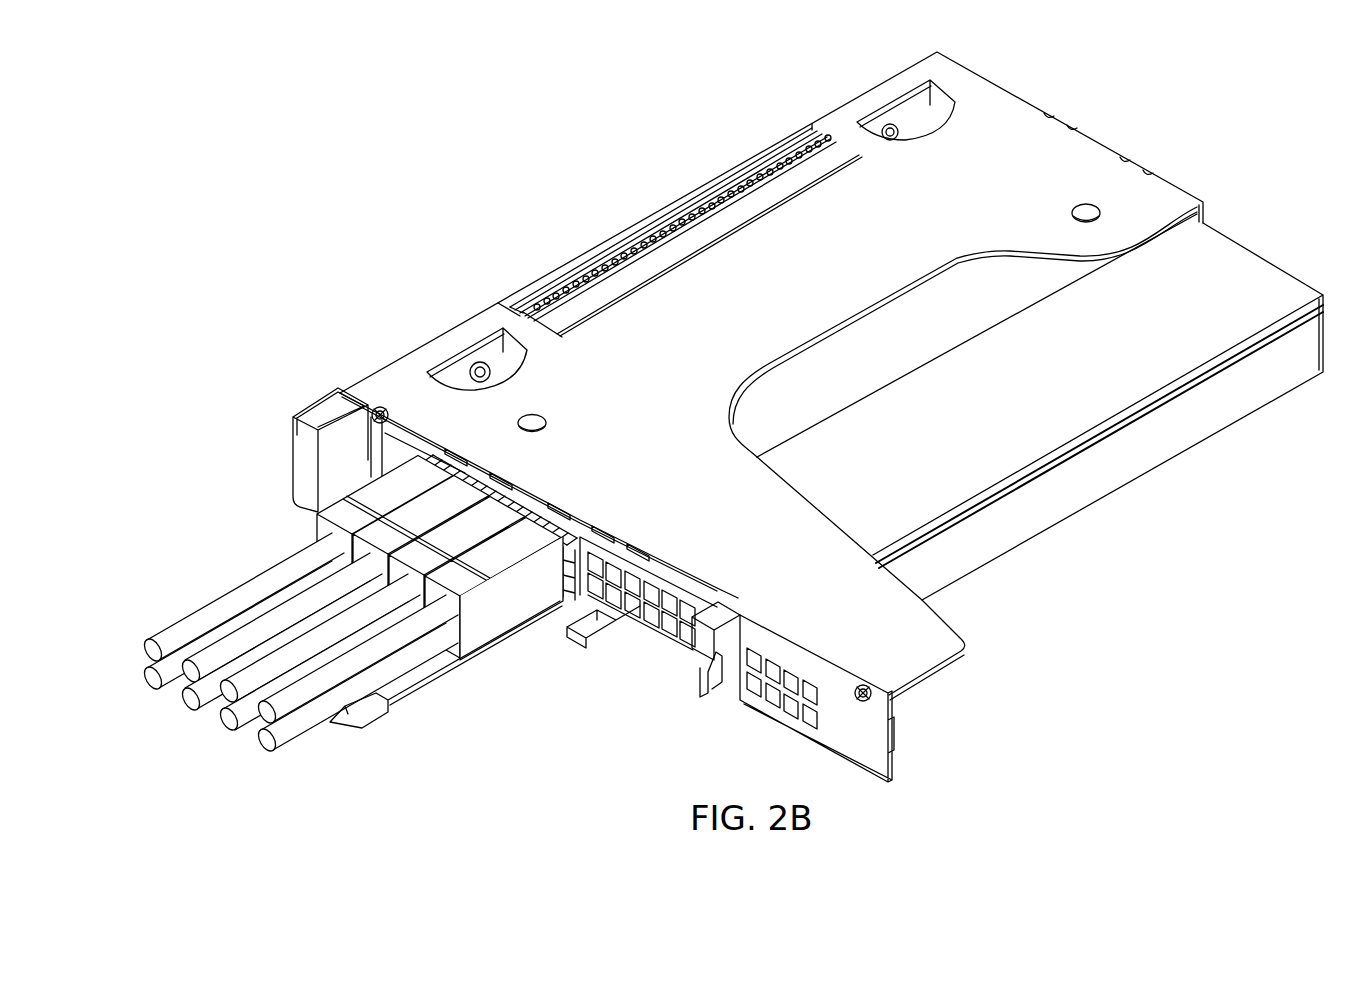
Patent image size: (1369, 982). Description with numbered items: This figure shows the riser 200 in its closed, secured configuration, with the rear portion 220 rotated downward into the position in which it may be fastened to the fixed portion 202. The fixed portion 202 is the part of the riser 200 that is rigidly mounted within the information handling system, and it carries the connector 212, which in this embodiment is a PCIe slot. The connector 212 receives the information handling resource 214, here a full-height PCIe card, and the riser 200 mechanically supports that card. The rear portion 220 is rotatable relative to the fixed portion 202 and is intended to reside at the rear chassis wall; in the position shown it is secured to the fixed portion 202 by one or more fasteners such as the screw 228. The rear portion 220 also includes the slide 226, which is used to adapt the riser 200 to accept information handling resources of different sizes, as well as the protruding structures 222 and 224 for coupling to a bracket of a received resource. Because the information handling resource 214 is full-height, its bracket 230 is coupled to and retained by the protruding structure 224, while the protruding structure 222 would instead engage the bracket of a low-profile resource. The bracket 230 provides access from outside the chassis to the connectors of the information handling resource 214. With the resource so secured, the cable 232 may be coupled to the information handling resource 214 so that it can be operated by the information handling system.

The riser 200 is at (1196, 104).
The fixed portion 202 is at (998, 117).
The connector 212 is at (667, 222).
The information handling resource 214 is at (1142, 463).
The rear portion 220 is at (650, 573).
The protruding structure 222 is at (572, 638).
The protruding structure 224 is at (692, 638).
The slide 226 is at (893, 738).
The screw 228 is at (392, 412).
The bracket 230 is at (697, 690).
The cable 232 is at (243, 590).